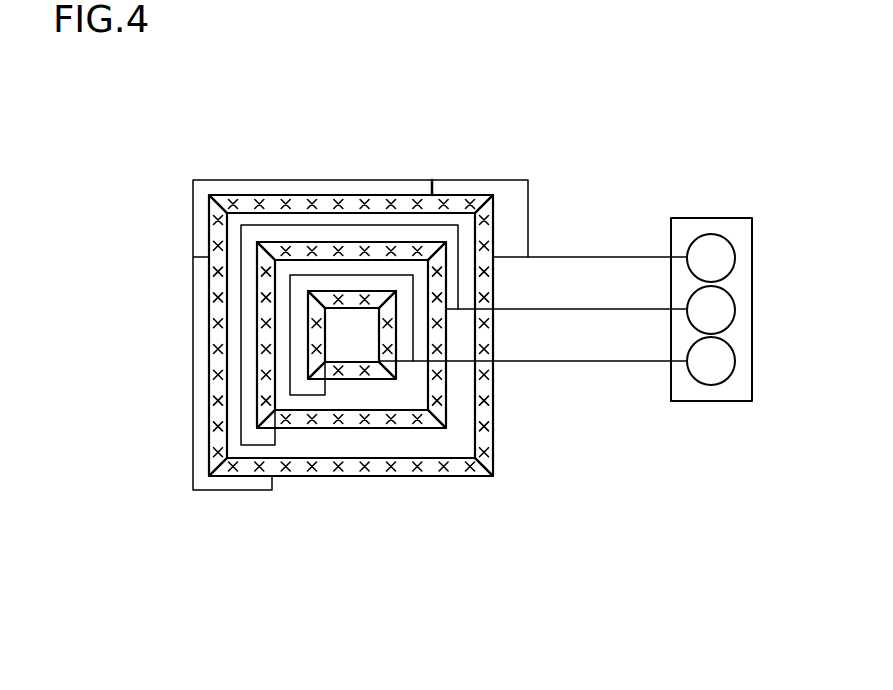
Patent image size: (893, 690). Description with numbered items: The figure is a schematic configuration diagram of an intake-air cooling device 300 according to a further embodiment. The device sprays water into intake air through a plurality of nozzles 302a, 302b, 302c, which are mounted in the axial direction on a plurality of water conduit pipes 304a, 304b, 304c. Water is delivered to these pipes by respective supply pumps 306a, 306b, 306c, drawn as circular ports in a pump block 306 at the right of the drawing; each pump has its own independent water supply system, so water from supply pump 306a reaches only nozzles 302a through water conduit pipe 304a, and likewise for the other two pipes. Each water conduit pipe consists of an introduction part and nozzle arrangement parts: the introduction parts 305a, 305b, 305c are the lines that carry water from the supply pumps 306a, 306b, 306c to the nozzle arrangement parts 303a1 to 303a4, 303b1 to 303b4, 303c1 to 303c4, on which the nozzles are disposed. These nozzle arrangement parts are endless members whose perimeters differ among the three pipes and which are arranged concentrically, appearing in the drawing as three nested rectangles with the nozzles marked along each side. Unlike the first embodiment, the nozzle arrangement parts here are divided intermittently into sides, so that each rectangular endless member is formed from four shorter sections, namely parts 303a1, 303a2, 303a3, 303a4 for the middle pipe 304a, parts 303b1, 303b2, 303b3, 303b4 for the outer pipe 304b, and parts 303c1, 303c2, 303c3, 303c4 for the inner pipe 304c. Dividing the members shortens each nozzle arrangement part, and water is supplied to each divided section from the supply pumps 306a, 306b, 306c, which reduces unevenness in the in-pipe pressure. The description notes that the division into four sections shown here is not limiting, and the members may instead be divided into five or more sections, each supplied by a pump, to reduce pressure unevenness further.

The intake-air cooling device 300 is at (632, 95).
The nozzle 302a is at (420, 242).
The nozzle 302b is at (472, 203).
The nozzle 302c is at (368, 297).
The nozzle arrangement part 303a1 is at (440, 332).
The nozzle arrangement part 303a2 is at (300, 250).
The nozzle arrangement part 303a3 is at (268, 337).
The nozzle arrangement part 303a4 is at (375, 420).
The nozzle arrangement part 303b1 is at (490, 283).
The nozzle arrangement part 303b2 is at (243, 203).
The nozzle arrangement part 303b3 is at (215, 312).
The nozzle arrangement part 303b4 is at (428, 467).
The nozzle arrangement part 303c1 is at (390, 337).
The nozzle arrangement part 303c2 is at (333, 300).
The nozzle arrangement part 303c3 is at (317, 337).
The nozzle arrangement part 303c4 is at (348, 372).
The water conduit pipe 304a is at (342, 340).
The water conduit pipe 304b is at (333, 342).
The water conduit pipe 304c is at (350, 328).
The introduction part 305a is at (618, 309).
The introduction part 305b is at (635, 257).
The introduction part 305c is at (623, 362).
The feed circuit 306 is at (746, 286).
The supply pump 306a is at (735, 310).
The supply pump 306b is at (735, 258).
The supply pump 306c is at (735, 361).